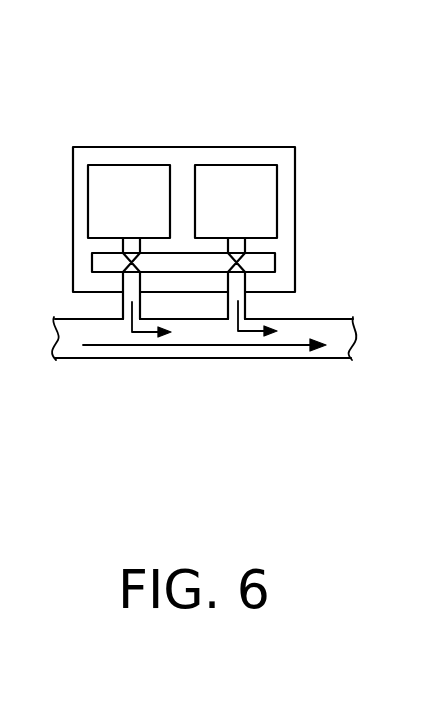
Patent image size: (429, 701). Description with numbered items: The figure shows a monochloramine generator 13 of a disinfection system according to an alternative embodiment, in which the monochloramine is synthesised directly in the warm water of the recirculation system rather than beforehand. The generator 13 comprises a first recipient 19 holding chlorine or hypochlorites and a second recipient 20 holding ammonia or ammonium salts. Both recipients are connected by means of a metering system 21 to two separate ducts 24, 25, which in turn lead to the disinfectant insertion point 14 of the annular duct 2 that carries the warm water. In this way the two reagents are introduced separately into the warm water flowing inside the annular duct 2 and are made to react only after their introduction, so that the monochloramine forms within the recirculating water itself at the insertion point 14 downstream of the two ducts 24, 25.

The annular duct 2 is at (338, 317).
The monochloramine generator 13 is at (290, 178).
The disinfectant insertion point 14 is at (240, 361).
The first recipient 19 is at (110, 165).
The second recipient 20 is at (237, 172).
The metering system 21 is at (265, 262).
The duct 24 is at (122, 307).
The duct 25 is at (248, 308).